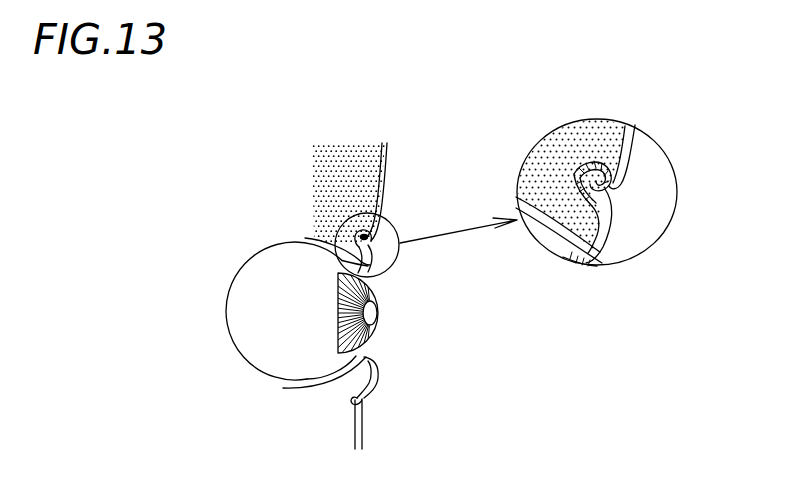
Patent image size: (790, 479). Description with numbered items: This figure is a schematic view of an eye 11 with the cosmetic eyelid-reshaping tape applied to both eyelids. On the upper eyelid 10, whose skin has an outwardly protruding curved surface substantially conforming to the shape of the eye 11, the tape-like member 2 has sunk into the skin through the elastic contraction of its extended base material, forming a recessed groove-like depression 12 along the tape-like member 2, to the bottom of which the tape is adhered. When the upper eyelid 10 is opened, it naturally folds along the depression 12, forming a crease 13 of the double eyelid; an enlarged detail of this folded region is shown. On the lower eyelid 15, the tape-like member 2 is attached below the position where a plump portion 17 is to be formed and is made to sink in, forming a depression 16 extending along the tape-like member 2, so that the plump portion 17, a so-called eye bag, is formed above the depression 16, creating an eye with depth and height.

The tape-like member 2 is at (362, 400).
The upper eyelid 10 is at (401, 277).
The eye 11 is at (262, 319).
The depression 12 is at (575, 167).
The crease 13 is at (622, 178).
The lower eyelid 15 is at (421, 379).
The depression 16 is at (351, 398).
The plump portion 17 is at (377, 385).